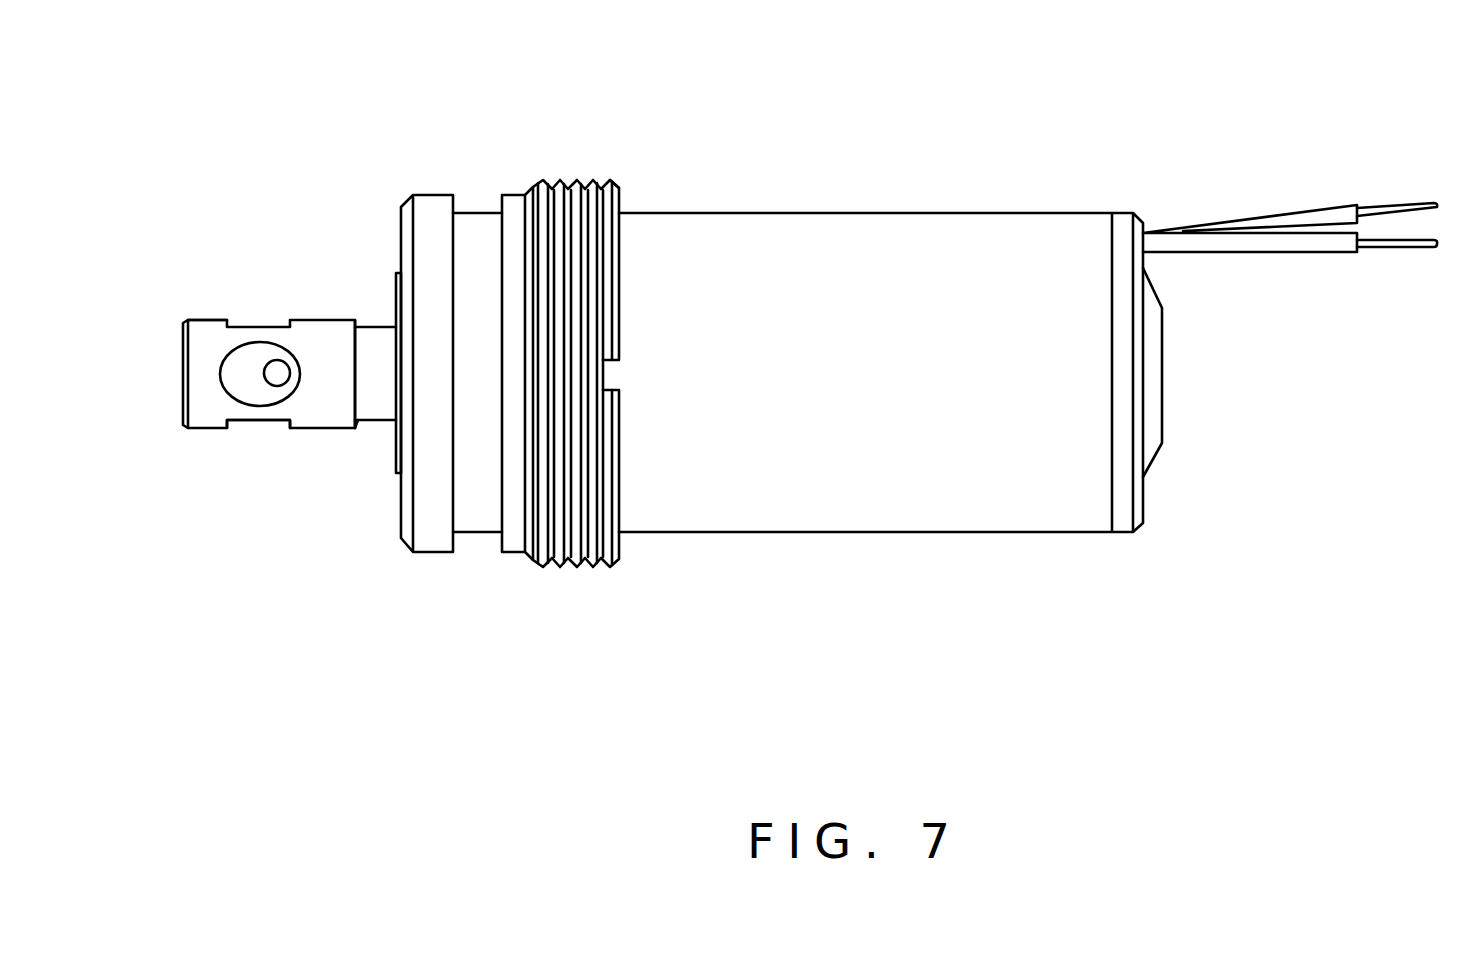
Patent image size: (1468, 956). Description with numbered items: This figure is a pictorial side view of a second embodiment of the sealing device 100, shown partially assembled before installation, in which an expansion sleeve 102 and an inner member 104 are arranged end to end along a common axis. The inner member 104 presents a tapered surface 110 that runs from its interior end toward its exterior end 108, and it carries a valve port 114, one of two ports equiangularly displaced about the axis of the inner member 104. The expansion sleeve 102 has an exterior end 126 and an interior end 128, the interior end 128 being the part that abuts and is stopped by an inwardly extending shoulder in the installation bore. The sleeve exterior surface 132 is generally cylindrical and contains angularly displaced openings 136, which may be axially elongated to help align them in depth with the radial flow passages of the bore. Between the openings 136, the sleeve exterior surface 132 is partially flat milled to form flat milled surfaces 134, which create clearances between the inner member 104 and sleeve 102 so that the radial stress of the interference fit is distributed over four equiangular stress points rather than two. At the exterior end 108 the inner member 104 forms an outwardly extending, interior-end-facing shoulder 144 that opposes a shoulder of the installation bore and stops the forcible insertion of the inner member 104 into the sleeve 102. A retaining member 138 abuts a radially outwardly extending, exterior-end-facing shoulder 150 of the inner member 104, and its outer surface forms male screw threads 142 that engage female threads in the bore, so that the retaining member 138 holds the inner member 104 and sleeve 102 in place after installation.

The sealing device 100 is at (831, 112).
The expansion sleeve 102 is at (307, 417).
The inner member 104 is at (363, 337).
The exterior end 108 is at (395, 423).
The tapered surface 110 is at (363, 421).
The valve port 114 is at (268, 370).
The exterior end 126 is at (357, 320).
The interior end 128 is at (182, 427).
The sleeve exterior surface 132 is at (198, 318).
The flat milled surfaces 134 is at (240, 422).
The openings 136 is at (263, 350).
The retaining member 138 is at (582, 205).
The male screw threads 142 is at (609, 181).
The shoulder 144 is at (399, 300).
The shoulder 150 is at (453, 195).